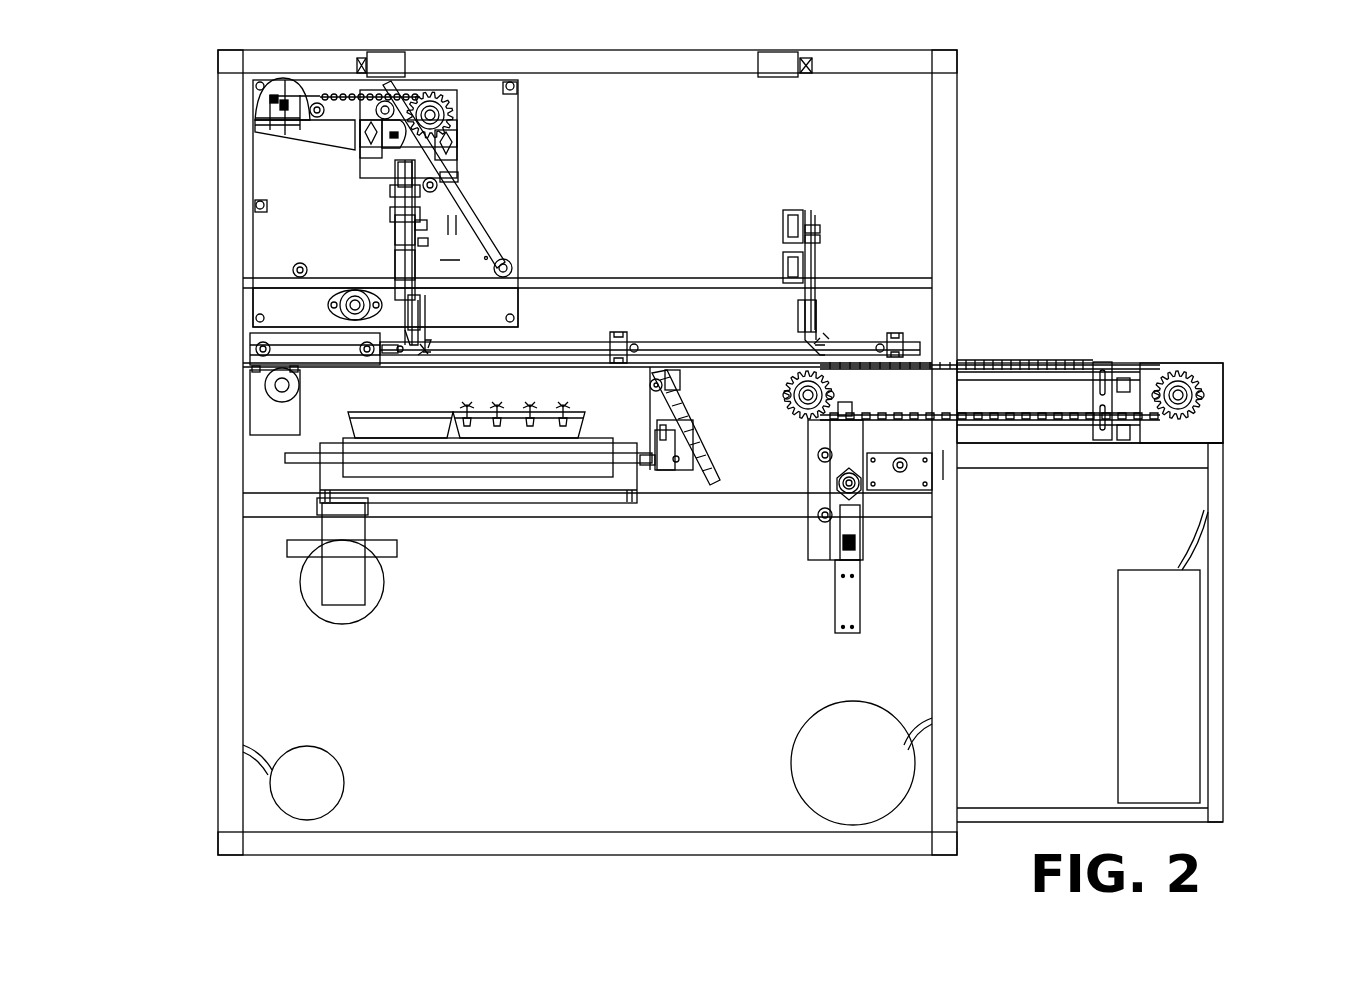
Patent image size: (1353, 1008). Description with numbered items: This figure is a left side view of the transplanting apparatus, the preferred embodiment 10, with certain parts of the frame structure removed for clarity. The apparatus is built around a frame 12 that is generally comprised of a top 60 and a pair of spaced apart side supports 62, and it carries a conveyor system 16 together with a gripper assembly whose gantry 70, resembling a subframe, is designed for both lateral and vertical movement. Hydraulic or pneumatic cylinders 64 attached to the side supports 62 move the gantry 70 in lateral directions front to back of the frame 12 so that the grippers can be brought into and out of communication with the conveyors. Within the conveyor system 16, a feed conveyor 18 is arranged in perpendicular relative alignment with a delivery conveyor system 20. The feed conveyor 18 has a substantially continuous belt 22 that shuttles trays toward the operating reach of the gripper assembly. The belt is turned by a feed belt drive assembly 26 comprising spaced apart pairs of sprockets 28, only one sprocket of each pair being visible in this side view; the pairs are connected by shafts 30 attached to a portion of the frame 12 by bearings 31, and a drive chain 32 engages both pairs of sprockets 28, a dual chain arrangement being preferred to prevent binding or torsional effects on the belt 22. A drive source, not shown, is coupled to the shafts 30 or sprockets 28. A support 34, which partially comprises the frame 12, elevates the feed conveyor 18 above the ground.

The preferred embodiment 10 is at (1047, 133).
The frame assembly 12 is at (946, 232).
The conveyor system 16 is at (515, 505).
The feed conveyor 18 is at (1222, 380).
The delivery conveyor system 20 is at (452, 505).
The substantially continuous belt 22 is at (1103, 363).
The feed belt drive assembly 26 is at (1000, 422).
The sprockets 28 is at (798, 412).
The shafts 30 is at (800, 388).
The bearings 31 is at (790, 395).
The drive chain 32 is at (980, 365).
The support 34 is at (1185, 628).
The top 60 is at (907, 58).
The side supports 62 is at (940, 135).
The cylinders 64 is at (660, 342).
The gantry 70 is at (265, 227).